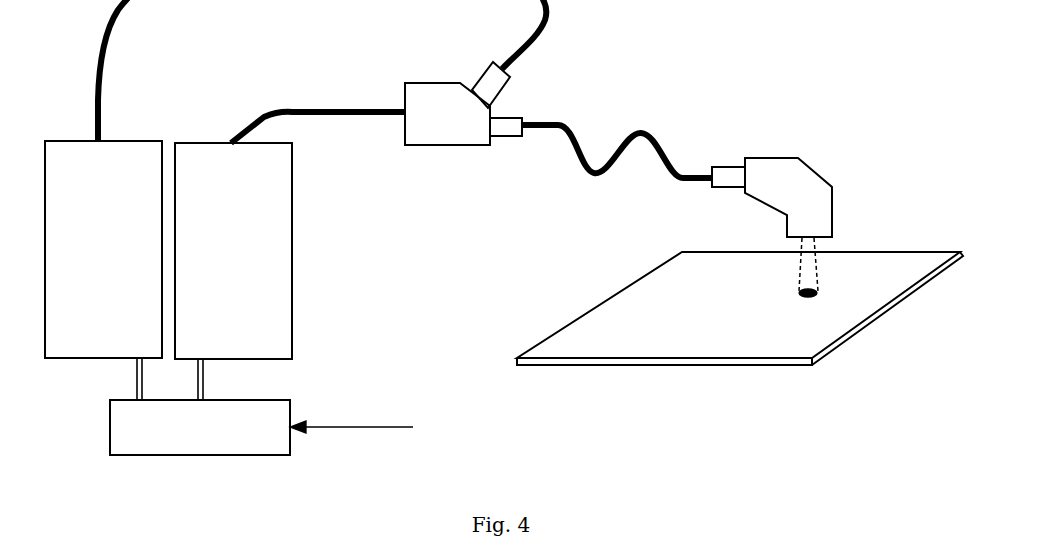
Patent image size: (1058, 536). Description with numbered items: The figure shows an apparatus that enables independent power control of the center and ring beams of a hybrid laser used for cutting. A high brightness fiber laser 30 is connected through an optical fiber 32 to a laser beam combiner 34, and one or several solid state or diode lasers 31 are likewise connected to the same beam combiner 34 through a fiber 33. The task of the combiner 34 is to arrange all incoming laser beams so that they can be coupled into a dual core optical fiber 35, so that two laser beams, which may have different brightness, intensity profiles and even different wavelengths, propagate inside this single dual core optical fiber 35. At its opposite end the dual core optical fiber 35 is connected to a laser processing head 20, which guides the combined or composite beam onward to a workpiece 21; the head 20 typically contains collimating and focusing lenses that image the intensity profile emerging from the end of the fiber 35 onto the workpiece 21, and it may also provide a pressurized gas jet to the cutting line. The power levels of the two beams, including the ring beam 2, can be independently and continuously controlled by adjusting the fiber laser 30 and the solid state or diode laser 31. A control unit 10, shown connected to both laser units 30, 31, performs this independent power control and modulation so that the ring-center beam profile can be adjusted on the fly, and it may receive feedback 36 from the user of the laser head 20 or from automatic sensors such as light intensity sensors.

The ring beam 2 is at (816, 262).
The control unit 10 is at (247, 400).
The laser processing head 20 is at (807, 165).
The workpiece 21 is at (630, 315).
The high brightness fiber laser 30 is at (112, 360).
The solid state or diode laser 31 is at (292, 181).
The optical fiber 32 is at (95, 105).
The fiber 33 is at (266, 117).
The laser beam combiner 34 is at (447, 83).
The dual core optical fiber 35 is at (597, 175).
The feedback 36 is at (369, 427).